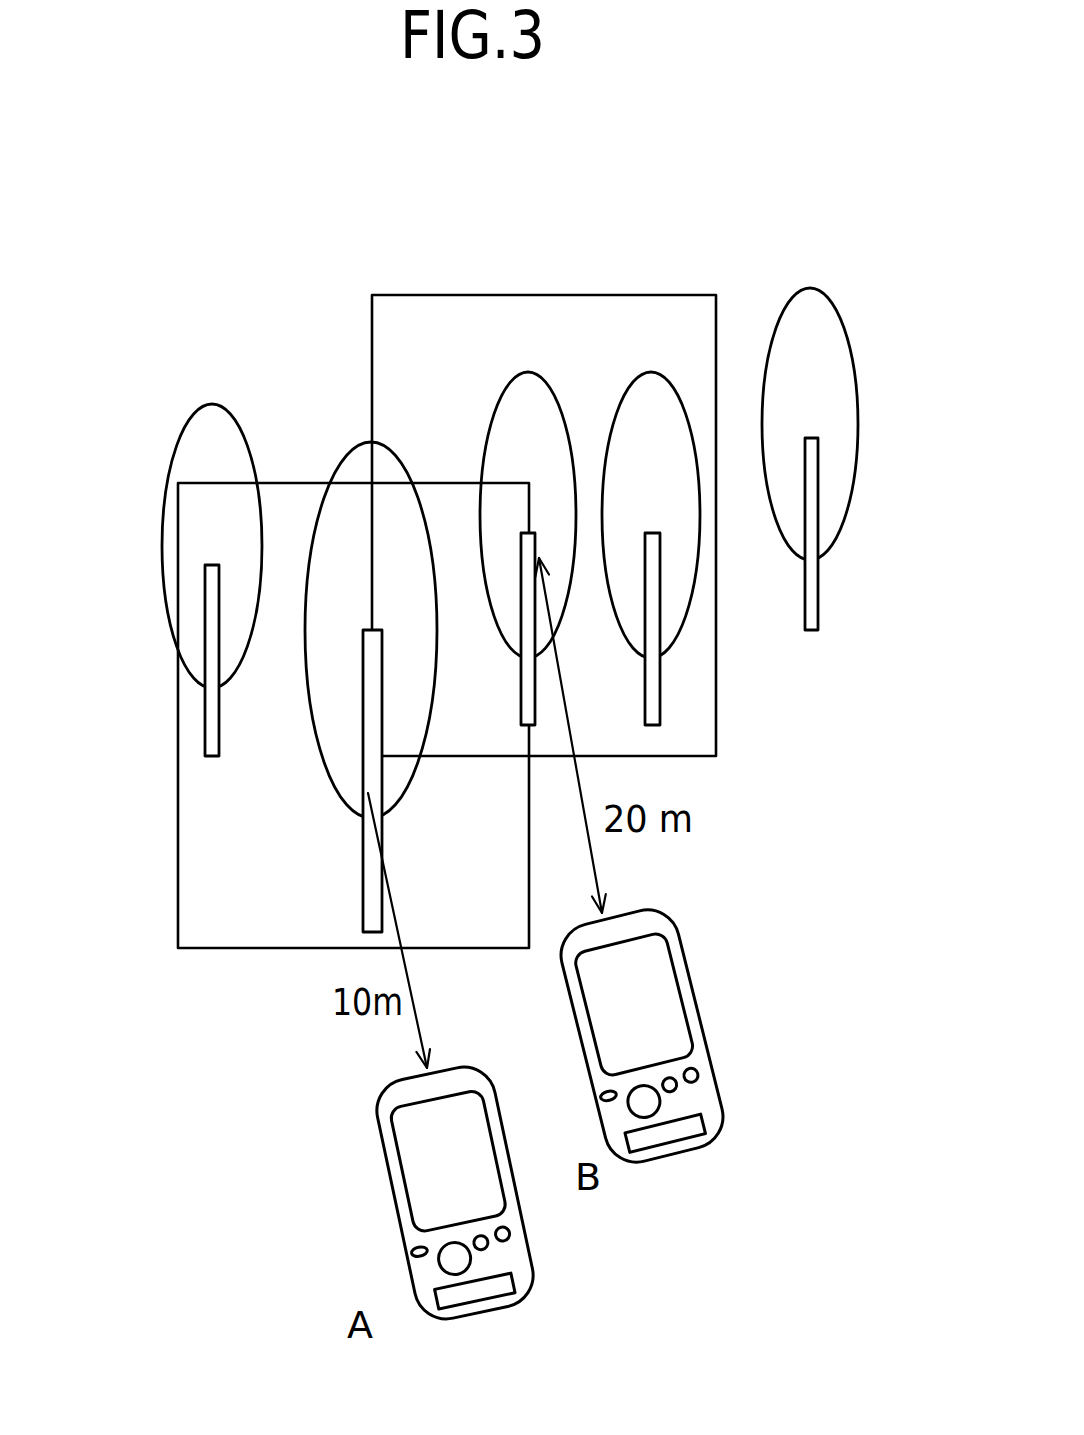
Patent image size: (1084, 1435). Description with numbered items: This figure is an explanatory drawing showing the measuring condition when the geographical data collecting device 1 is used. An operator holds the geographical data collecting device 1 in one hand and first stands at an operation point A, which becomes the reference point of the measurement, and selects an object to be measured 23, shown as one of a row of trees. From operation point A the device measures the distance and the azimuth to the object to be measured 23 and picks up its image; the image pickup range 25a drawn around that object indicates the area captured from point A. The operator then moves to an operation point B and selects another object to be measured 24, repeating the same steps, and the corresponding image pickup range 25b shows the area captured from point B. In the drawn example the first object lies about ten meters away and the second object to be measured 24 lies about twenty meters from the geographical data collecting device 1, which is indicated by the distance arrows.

The geographical data collecting device 1 is at (675, 933).
The object to be measured 23 is at (347, 453).
The object to be measured 24 is at (535, 373).
The image pickup range 25a is at (178, 790).
The image pickup range 25b is at (600, 293).